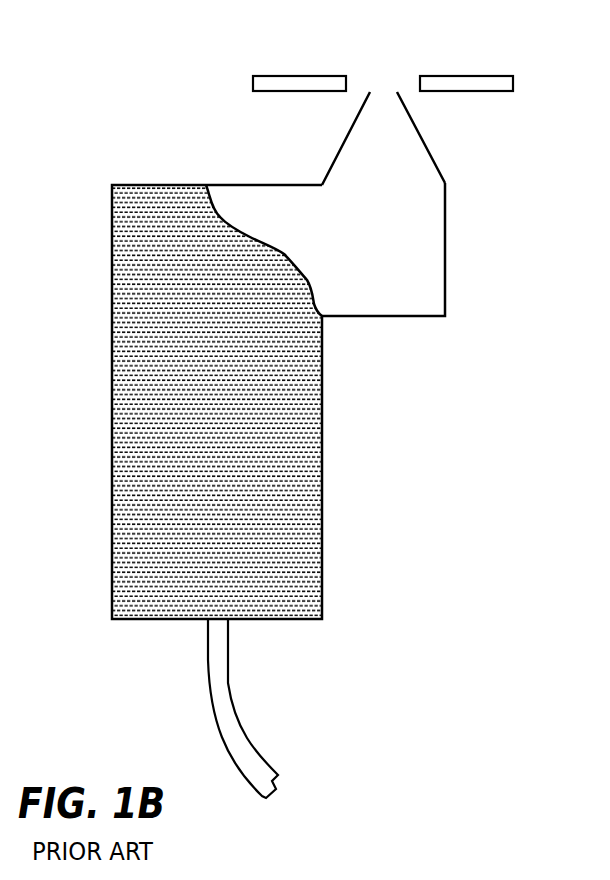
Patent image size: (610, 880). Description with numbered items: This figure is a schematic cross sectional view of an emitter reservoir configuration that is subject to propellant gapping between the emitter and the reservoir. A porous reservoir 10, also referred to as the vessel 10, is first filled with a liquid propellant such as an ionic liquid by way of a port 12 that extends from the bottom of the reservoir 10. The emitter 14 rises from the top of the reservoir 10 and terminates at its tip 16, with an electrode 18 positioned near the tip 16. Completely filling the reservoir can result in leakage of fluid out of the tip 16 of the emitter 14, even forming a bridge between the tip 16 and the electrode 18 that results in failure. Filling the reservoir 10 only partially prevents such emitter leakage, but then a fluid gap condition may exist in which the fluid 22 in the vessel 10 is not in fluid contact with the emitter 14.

The reservoir 10 is at (322, 463).
The port 12 is at (228, 677).
The emitter 14 is at (422, 137).
The tip 16 is at (383, 90).
The electrode 18 is at (513, 82).
The fluid 22 is at (188, 377).